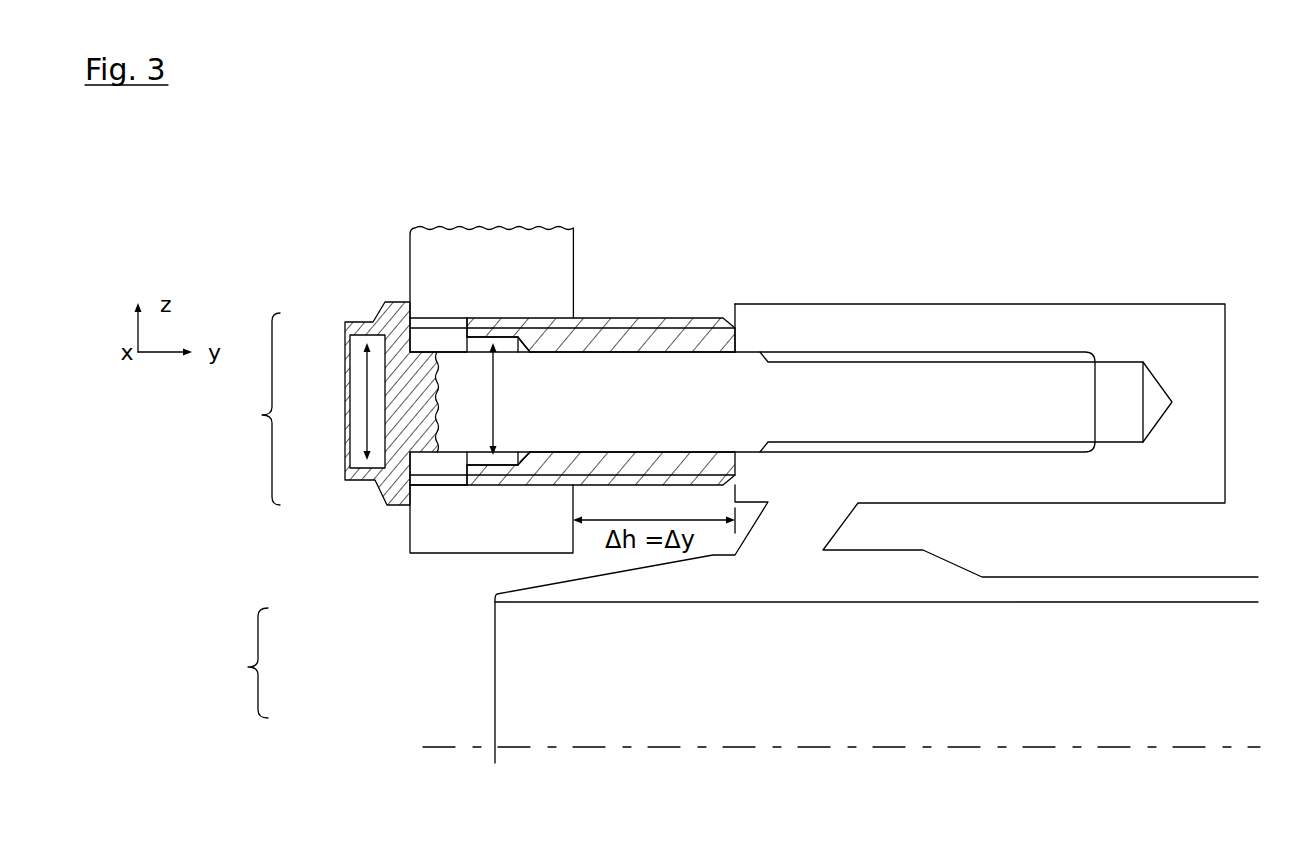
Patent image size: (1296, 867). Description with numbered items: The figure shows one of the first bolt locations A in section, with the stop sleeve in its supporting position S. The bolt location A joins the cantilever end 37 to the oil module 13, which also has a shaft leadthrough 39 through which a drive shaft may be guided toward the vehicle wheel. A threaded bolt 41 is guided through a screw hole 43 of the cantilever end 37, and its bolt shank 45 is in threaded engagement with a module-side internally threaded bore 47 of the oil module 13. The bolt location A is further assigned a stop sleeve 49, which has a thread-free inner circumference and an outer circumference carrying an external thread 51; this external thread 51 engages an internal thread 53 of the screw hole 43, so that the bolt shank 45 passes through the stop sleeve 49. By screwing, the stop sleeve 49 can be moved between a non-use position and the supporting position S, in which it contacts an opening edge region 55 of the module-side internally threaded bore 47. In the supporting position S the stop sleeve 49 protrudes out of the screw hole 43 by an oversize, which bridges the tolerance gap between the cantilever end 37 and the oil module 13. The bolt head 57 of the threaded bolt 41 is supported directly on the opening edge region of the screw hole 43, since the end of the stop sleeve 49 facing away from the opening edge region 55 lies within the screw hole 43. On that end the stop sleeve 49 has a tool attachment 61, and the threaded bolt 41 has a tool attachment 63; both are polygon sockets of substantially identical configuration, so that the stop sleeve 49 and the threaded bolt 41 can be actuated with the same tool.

The oil module 13 is at (1048, 304).
The cantilever end 37 is at (410, 267).
The shaft leadthrough 39 is at (825, 688).
The threaded bolt 41 is at (239, 663).
The screw hole 43 is at (426, 343).
The bolt shank 45 is at (465, 428).
The module-side internally threaded bore 47 is at (878, 360).
The stop sleeve 49 is at (632, 318).
The external thread 51 is at (670, 330).
The internal thread 53 is at (450, 325).
The opening edge region 55 is at (747, 332).
The bolt head 57 is at (378, 488).
The tool attachment 61 is at (493, 405).
The tool attachment 63 is at (367, 402).
The supporting position S is at (352, 217).
The first bolt location A is at (257, 409).